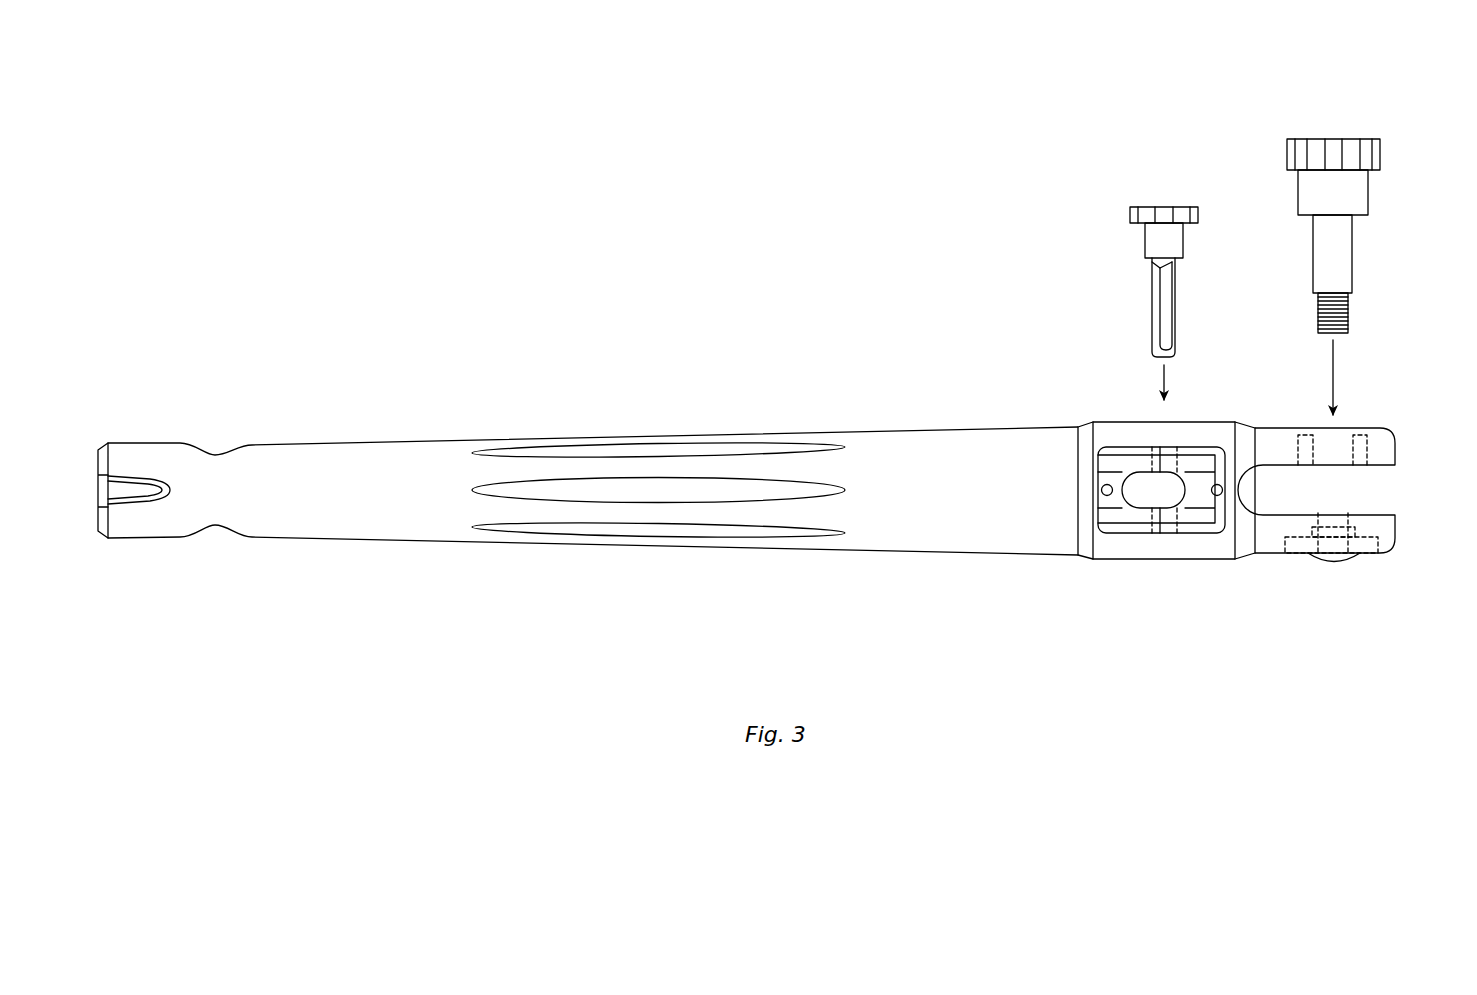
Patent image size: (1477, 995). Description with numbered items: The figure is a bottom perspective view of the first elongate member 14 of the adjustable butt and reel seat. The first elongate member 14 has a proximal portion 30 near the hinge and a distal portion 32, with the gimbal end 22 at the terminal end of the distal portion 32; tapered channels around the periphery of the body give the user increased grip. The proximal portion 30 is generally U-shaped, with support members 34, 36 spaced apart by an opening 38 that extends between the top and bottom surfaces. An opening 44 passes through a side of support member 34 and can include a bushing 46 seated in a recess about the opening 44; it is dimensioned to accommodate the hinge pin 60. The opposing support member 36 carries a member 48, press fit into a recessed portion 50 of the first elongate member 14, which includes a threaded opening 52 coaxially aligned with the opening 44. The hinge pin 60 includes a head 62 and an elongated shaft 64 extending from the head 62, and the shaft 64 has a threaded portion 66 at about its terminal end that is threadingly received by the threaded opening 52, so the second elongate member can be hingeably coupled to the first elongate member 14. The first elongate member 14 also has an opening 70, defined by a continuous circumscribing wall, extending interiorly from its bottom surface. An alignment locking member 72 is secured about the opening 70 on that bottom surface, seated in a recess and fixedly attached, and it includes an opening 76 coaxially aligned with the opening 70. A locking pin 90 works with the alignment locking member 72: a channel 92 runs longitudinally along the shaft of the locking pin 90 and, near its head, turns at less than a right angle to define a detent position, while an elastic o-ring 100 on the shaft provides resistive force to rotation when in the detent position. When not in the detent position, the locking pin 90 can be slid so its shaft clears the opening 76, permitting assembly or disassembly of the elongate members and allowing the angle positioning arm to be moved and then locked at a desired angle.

The first elongate member 14 is at (432, 587).
The gimbal end 22 is at (148, 548).
The proximal portion 30 is at (1238, 628).
The distal portion 32 is at (358, 427).
The support member 34 is at (1385, 447).
The support member 36 is at (1385, 522).
The opening 38 is at (1345, 495).
The opening 44 is at (1318, 455).
The bushing 46 is at (1357, 430).
The member 48 is at (1303, 545).
The recessed portion 50 is at (1300, 530).
The threaded opening 52 is at (1345, 540).
The hinge pin 60 is at (1332, 240).
The head 62 is at (1300, 158).
The elongated shaft 64 is at (1325, 257).
The threaded portion 66 is at (1328, 313).
The opening 70 is at (1137, 445).
The alignment locking member 72 is at (1095, 515).
The opening 76 is at (1145, 497).
The locking pin 90 is at (1119, 269).
The channel 92 is at (1162, 312).
The elastic o-ring 100 is at (1160, 265).